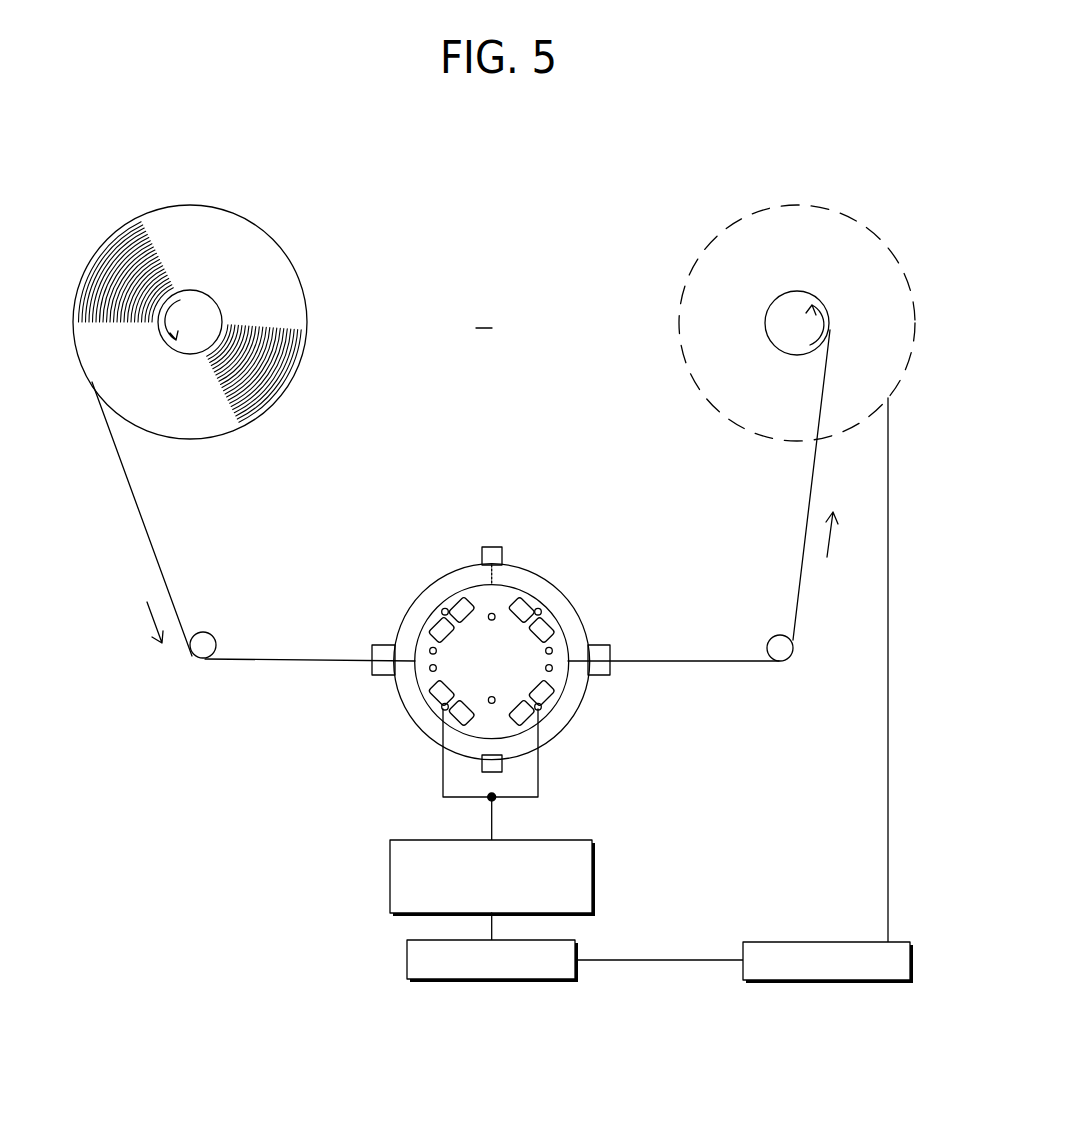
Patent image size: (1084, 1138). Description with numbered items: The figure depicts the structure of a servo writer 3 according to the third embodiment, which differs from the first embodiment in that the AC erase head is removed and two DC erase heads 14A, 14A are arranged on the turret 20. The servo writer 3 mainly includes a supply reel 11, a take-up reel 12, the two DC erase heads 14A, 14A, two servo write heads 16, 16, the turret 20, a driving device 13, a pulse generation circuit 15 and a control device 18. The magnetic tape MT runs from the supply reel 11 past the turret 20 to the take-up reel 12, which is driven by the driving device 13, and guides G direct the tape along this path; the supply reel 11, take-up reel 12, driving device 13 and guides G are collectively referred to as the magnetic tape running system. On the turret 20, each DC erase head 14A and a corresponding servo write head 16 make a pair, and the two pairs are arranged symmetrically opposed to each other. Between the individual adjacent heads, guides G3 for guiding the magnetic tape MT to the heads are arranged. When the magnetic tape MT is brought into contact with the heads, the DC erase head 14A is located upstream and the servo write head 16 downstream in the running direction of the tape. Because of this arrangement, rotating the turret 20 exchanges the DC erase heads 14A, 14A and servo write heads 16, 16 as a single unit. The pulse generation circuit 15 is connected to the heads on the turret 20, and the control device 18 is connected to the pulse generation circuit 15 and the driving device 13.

The servo writer 3 is at (683, 117).
The supply reel 11 is at (246, 221).
The take-up reel 12 is at (860, 221).
The driving device 13 is at (893, 980).
The DC erase head 14A is at (543, 608).
The pulse generation circuit 15 is at (593, 877).
The servo write head 16 is at (442, 606).
The control device 18 is at (555, 980).
The turret 20 is at (589, 562).
The guide G is at (197, 657).
The guide G3 is at (489, 615).
The magnetic tape MT is at (135, 513).